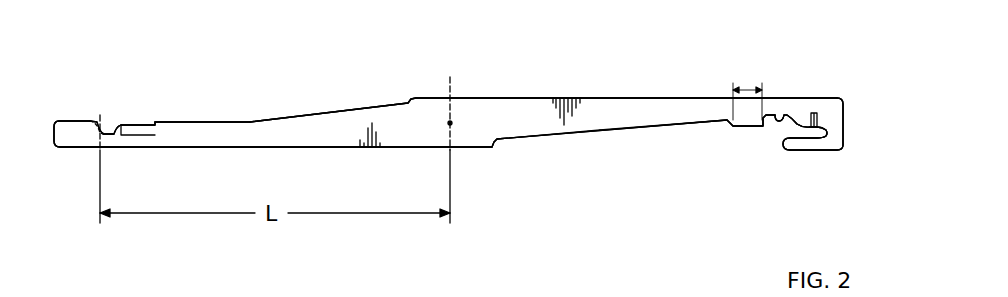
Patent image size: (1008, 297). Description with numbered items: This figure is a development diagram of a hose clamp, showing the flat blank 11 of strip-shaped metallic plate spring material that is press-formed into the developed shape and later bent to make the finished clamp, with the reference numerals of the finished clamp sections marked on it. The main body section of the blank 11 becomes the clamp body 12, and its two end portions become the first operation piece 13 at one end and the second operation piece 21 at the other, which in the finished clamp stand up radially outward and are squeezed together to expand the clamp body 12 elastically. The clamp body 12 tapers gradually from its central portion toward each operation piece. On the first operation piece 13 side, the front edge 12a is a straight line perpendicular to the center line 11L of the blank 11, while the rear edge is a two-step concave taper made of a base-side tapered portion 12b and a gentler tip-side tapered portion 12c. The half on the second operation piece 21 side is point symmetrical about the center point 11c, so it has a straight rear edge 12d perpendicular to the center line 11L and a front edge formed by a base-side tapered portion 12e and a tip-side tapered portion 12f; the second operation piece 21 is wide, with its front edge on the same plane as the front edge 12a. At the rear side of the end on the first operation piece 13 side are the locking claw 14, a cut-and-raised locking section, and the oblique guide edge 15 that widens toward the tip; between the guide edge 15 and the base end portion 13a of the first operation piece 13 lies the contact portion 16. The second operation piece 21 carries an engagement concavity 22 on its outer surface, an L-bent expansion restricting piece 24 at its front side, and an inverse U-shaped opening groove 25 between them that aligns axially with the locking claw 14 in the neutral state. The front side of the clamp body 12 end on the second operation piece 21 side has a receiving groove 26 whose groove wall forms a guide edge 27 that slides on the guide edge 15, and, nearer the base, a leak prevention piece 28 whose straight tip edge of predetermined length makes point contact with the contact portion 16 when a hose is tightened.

The blank 11 is at (562, 77).
The center line 11L is at (450, 139).
The center point 11c is at (450, 123).
The clamp body 12 is at (474, 104).
The front edge 12a is at (283, 147).
The base-side tapered portion 12b is at (342, 110).
The tip-side tapered portion 12c is at (243, 121).
The rear edge 12d is at (605, 98).
The base-side tapered portion 12e is at (523, 138).
The tip-side tapered portion 12f is at (648, 122).
The first operation piece 13 is at (68, 148).
The base end portion 13a is at (90, 121).
The locking claw 14 is at (138, 128).
The guide edge 15 is at (110, 126).
The contact portion 16 is at (103, 130).
The second operation piece 21 is at (832, 103).
The engagement concavity 22 is at (818, 120).
The expansion restricting piece 24 is at (788, 146).
The opening groove 25 is at (814, 143).
The receiving groove 26 is at (776, 118).
The guide edge 27 is at (792, 122).
The leak prevention piece 28 is at (748, 128).